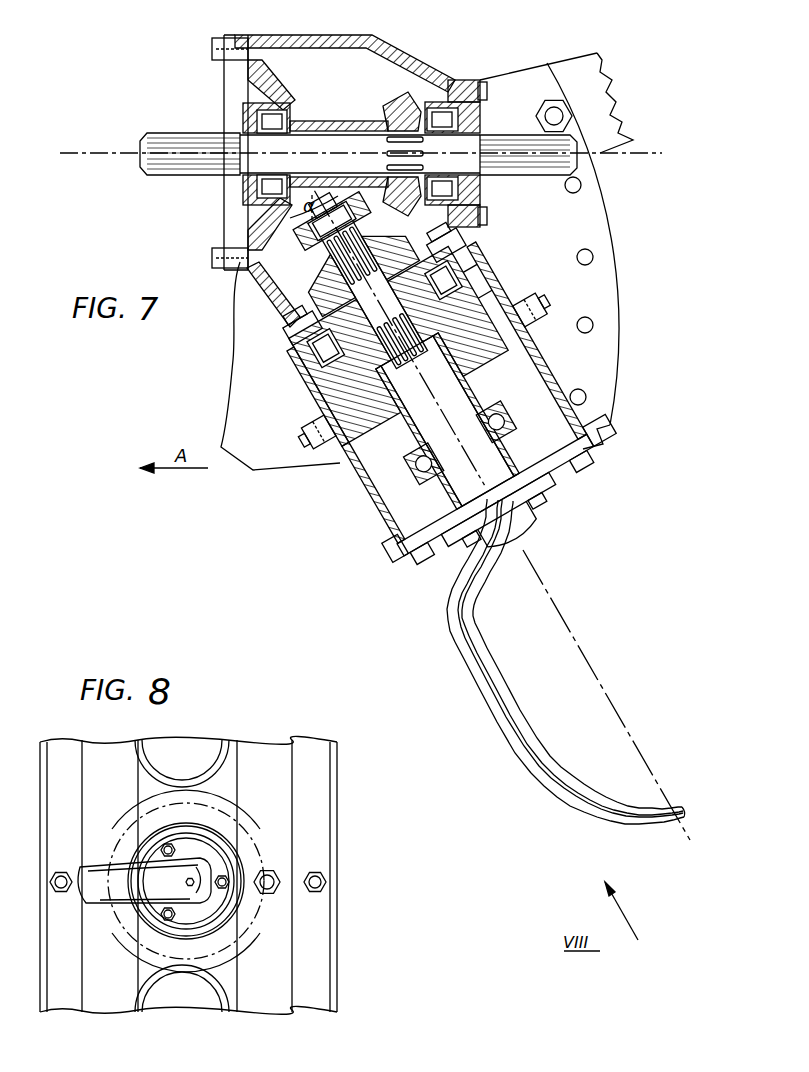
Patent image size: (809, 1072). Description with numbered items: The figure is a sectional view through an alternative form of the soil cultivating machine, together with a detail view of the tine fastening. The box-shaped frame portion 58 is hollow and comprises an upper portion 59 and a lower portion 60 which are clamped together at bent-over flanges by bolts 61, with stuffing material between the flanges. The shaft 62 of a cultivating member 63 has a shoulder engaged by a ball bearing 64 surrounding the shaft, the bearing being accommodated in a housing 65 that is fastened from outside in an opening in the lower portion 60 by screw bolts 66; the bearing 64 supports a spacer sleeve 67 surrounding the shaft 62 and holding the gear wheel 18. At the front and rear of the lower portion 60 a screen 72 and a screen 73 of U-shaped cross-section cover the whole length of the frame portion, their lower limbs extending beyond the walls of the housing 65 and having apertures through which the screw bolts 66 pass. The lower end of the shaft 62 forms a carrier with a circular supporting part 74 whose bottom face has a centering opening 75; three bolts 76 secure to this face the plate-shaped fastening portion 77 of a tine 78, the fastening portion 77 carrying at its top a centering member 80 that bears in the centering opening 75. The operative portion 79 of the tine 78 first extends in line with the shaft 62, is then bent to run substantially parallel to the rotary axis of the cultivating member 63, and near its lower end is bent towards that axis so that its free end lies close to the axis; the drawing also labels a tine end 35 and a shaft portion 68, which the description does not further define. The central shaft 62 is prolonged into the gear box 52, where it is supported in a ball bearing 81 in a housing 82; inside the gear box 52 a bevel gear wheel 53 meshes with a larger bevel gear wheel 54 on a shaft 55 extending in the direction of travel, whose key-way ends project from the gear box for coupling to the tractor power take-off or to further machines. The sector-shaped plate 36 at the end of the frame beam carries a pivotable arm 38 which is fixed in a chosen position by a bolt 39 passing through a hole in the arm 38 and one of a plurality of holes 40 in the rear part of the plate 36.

In FIG. 7, the gear wheel 18 is at (452, 322).
In FIG. 7, the lever end 35 is at (538, 778).
In FIG. 8, the lever end 35 is at (122, 915).
In FIG. 7, the sector-shaped plate 36 is at (617, 224).
In FIG. 7, the arm 38 is at (618, 106).
In FIG. 7, the bolt 39 is at (541, 112).
In FIG. 7, the holes 40 is at (594, 258).
In FIG. 7, the gear box 52 is at (336, 42).
In FIG. 7, the bevel gear wheel 53 is at (297, 258).
In FIG. 7, the bevel gear wheel 54 is at (393, 100).
In FIG. 7, the shaft 55 is at (175, 134).
In FIG. 7, the box-shaped frame portion 58 is at (510, 284).
In FIG. 7, the upper portion 59 is at (300, 388).
In FIG. 7, the lower portion 60 is at (358, 480).
In FIG. 7, the bolts 61 is at (547, 328).
In FIG. 8, the bolts 61 is at (60, 870).
In FIG. 7, the shaft 62 is at (455, 385).
In FIG. 7, the cultivating member 63 is at (547, 649).
In FIG. 7, the ball bearing 64 is at (412, 452).
In FIG. 7, the housing 65 is at (402, 462).
In FIG. 7, the screw bolts 66 is at (566, 458).
In FIG. 8, the screw bolts 66 is at (272, 892).
In FIG. 7, the spacer sleeve 67 is at (400, 402).
In FIG. 7, the pinion shaft 68 is at (360, 324).
In FIG. 7, the screen 72 is at (392, 537).
In FIG. 8, the screen 72 is at (102, 1005).
In FIG. 7, the screen 73 is at (600, 430).
In FIG. 8, the screen 73 is at (273, 1003).
In FIG. 8, the circular supporting part 74 is at (157, 840).
In FIG. 7, the centering opening 75 is at (516, 521).
In FIG. 7, the bolts 76 is at (470, 520).
In FIG. 8, the bolts 76 is at (178, 849).
In FIG. 7, the fastening portion 77 is at (446, 528).
In FIG. 8, the fastening portion 77 is at (215, 915).
In FIG. 7, the tine 78 is at (458, 662).
In FIG. 8, the tine 78 is at (97, 918).
In FIG. 7, the operative portion 79 is at (510, 733).
In FIG. 7, the centering member 80 is at (522, 530).
In FIG. 7, the ball bearing 81 is at (392, 276).
In FIG. 7, the housing 82 is at (286, 343).